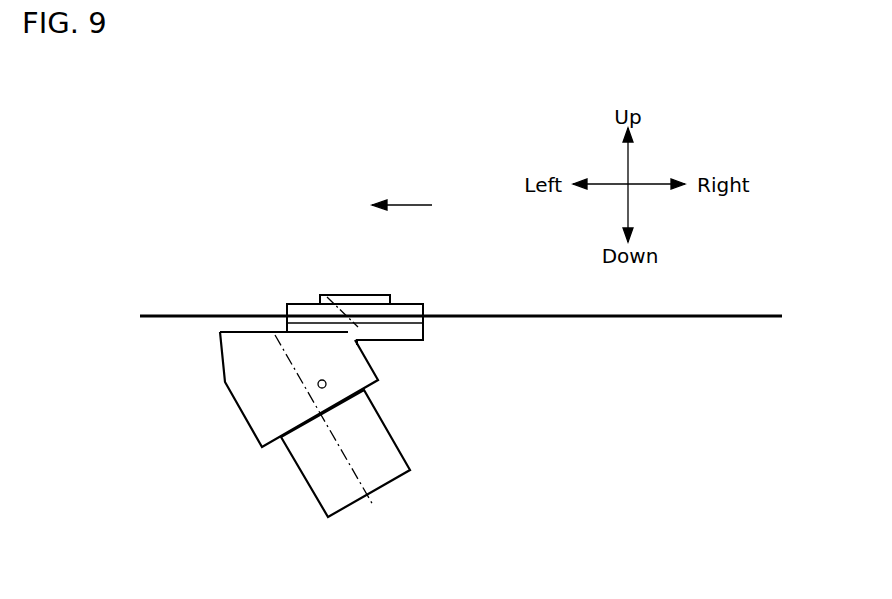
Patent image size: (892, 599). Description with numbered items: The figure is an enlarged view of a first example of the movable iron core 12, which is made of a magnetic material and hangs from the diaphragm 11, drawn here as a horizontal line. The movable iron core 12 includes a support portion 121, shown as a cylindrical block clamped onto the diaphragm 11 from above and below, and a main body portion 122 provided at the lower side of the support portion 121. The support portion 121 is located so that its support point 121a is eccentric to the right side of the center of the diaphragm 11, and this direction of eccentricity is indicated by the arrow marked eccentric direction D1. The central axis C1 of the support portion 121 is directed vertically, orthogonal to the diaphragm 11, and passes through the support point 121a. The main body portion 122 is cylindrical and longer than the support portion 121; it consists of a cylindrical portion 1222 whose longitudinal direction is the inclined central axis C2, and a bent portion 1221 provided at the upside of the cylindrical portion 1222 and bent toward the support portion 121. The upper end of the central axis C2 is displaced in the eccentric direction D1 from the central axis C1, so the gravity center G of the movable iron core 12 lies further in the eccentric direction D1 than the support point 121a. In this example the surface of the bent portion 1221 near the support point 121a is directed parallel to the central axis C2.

The diaphragm 11 is at (500, 320).
The movable iron core 12 is at (113, 327).
The support portion 121 is at (268, 298).
The support point 121a is at (323, 295).
The main body portion 122 is at (168, 433).
The bent portion 1221 is at (227, 390).
The cylindrical portion 1222 is at (292, 463).
The central axis of the support portion C1 is at (357, 298).
The central axis of the main body portion C2 is at (354, 468).
The gravity center G is at (326, 383).
The eccentric direction D1 is at (402, 192).